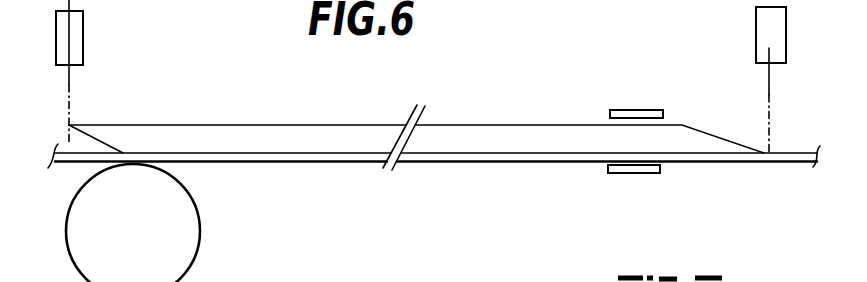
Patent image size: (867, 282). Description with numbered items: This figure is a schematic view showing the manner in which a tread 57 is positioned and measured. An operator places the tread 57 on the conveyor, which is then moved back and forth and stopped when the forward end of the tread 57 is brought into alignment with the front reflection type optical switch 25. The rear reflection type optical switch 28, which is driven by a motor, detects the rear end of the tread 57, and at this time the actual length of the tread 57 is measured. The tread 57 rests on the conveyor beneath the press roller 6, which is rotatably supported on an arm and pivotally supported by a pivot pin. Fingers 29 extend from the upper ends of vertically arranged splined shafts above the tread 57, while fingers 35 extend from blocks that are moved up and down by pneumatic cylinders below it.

The press roller 6 is at (189, 238).
The reflection type optical switch 25 is at (83, 38).
The reflection type optical switch 28 is at (756, 28).
The fingers 29 is at (627, 110).
The fingers 35 is at (642, 175).
The tread 57 is at (235, 133).